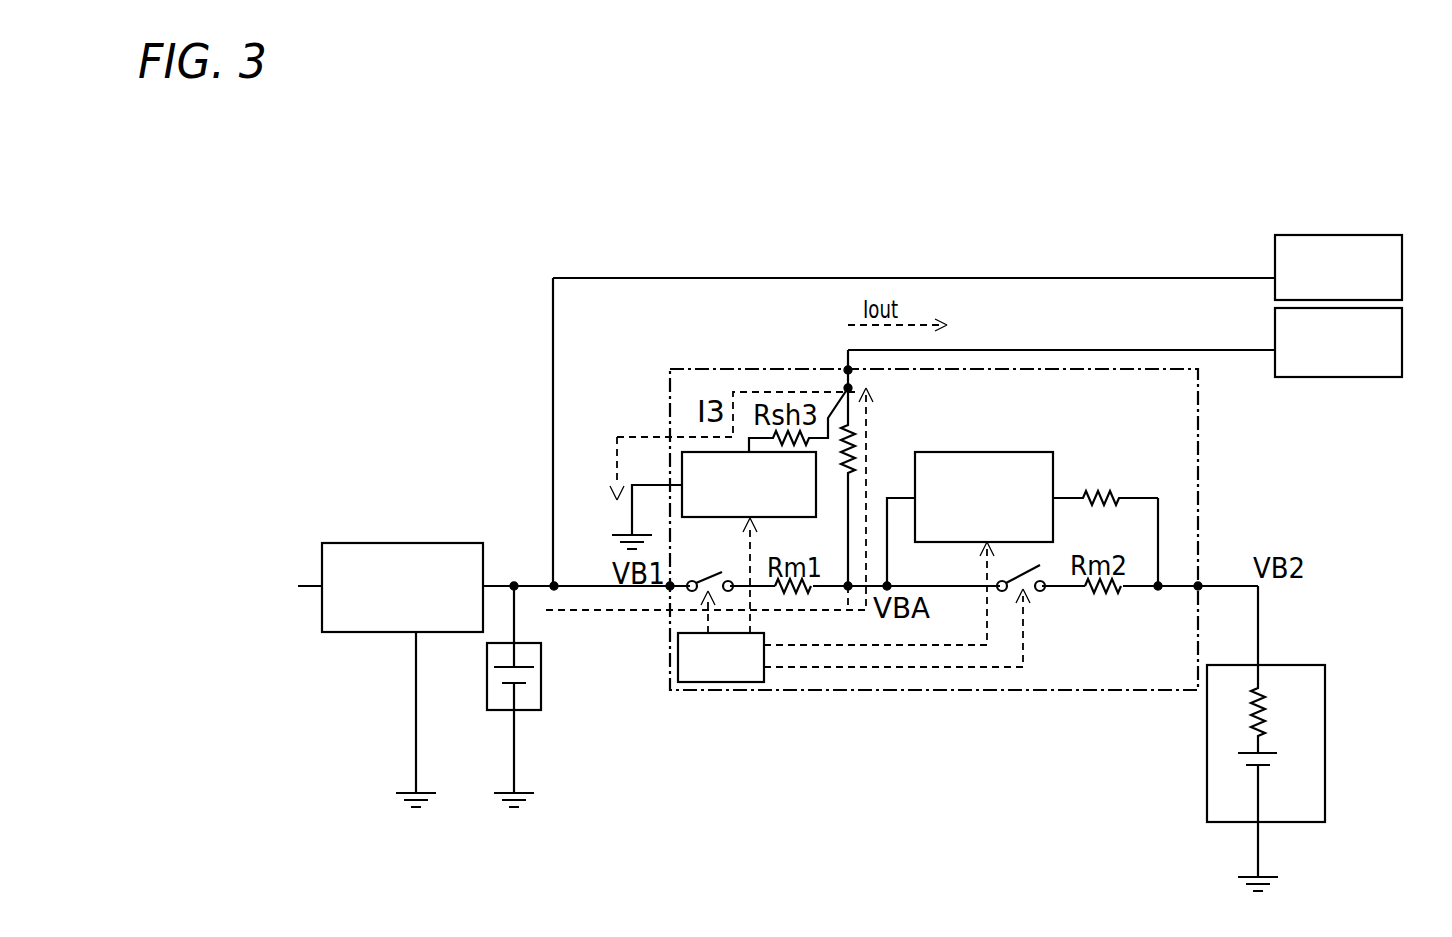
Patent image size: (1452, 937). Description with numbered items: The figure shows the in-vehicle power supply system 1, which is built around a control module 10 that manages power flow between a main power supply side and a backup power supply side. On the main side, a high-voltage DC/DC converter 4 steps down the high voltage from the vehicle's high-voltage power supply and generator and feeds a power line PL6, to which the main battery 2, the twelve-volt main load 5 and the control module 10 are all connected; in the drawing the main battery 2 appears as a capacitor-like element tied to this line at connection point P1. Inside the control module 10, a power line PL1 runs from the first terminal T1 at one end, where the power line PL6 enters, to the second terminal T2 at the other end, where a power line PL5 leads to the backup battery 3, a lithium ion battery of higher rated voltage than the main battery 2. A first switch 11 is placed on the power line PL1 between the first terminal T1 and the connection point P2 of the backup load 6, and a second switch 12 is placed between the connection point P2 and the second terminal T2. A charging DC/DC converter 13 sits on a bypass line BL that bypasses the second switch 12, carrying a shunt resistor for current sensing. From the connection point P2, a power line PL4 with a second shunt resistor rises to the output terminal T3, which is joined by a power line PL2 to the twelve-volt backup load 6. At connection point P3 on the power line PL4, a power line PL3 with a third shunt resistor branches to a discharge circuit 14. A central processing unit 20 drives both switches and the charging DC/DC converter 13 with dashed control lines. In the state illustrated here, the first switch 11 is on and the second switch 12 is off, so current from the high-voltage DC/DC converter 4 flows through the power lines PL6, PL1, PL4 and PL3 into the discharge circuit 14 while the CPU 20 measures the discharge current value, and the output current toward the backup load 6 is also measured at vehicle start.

The in-vehicle power supply system 1 is at (1242, 201).
The main battery 2 is at (542, 678).
The backup battery 3 is at (1207, 765).
The high-voltage DC/DC converter 4 is at (418, 543).
The main load 5 is at (1338, 235).
The backup load 6 is at (1340, 378).
The control module 10 is at (999, 362).
The first switch 11 is at (705, 580).
The second switch 12 is at (1027, 577).
The charging DC/DC converter 13 is at (987, 452).
The discharge circuit 14 is at (730, 452).
The central processing unit (CPU) 20 is at (722, 692).
The first connection point P1 is at (553, 586).
The connection point P2 is at (848, 590).
The connection point P3 is at (846, 387).
The VB1 terminal T1 is at (672, 592).
The VB2 terminal T2 is at (1200, 582).
The Vout terminal T3 is at (848, 368).
The power line PL1 is at (955, 590).
The power line PL2 is at (889, 349).
The power line PL3 is at (835, 398).
The power line PL4 is at (850, 427).
The power line PL5 is at (1259, 627).
The power line PL6 is at (607, 586).
The bypass line BL is at (1160, 525).